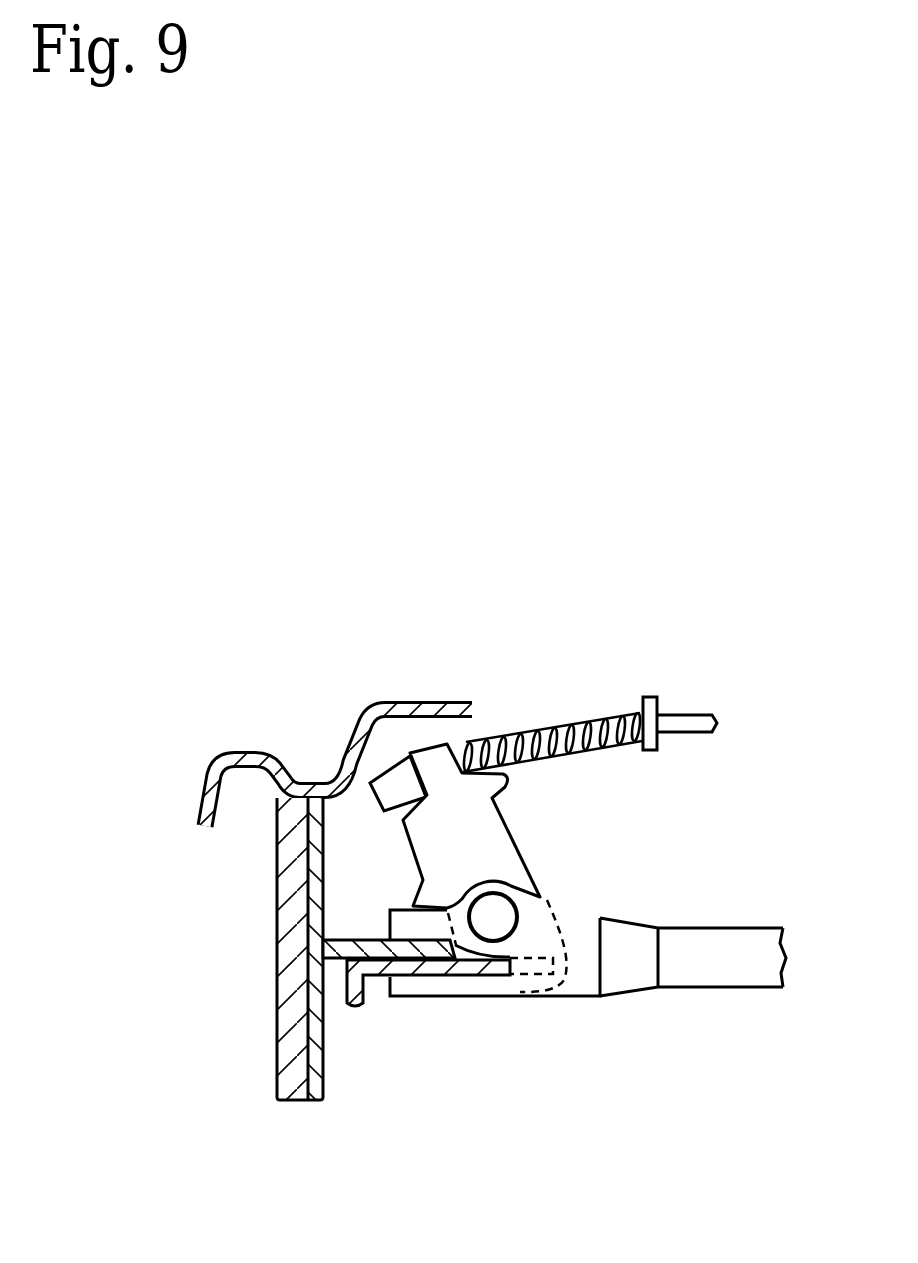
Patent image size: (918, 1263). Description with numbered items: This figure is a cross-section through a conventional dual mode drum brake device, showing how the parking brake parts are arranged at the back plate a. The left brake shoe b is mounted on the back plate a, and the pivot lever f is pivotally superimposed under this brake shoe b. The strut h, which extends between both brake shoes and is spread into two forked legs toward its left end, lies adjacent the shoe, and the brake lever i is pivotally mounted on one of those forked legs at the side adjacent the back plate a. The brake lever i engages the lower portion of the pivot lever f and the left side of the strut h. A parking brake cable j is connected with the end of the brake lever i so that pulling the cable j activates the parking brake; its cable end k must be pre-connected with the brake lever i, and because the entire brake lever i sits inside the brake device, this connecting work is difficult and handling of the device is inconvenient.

The back plate a is at (412, 702).
The brake shoe b is at (277, 962).
The pivot lever f is at (373, 977).
The strut h is at (693, 926).
The brake lever i is at (506, 832).
The parking brake cable j is at (580, 714).
The cable end k is at (392, 772).